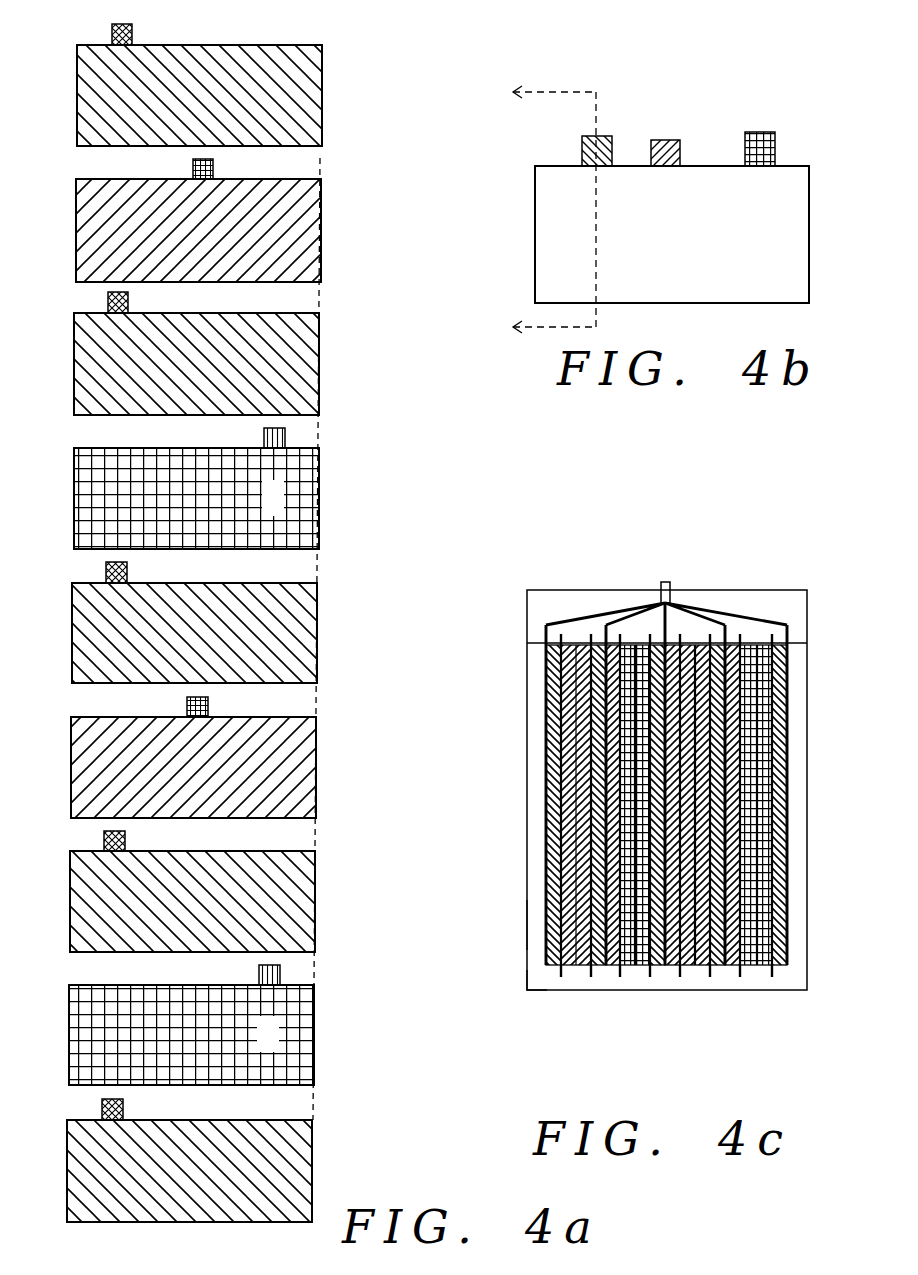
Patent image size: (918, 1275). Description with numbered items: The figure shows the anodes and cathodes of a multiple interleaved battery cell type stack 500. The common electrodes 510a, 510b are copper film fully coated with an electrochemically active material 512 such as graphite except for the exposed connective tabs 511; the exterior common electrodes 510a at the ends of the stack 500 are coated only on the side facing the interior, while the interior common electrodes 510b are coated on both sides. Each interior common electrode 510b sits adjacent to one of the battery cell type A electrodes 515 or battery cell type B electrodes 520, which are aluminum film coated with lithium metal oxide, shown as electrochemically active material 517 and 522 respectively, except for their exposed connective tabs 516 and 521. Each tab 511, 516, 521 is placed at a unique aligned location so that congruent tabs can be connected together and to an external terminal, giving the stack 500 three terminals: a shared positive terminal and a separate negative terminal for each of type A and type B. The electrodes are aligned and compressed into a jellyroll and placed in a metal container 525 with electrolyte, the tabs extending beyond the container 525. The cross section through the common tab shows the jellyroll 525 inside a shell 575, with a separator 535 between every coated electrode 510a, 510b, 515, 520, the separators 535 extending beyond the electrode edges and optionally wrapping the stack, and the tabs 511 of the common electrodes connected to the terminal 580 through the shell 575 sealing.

In FIG. 4A, the stack of electrodes 500 is at (372, 46).
In FIG. 4B, the stack of electrodes 500 is at (636, 64).
In FIG. 4C, the stack of electrodes 500 is at (546, 967).
In FIG. 4A, the exterior common electrode 510a is at (322, 102).
In FIG. 4C, the exterior common electrode 510a is at (546, 888).
In FIG. 4A, the interior common electrode 510b is at (319, 378).
In FIG. 4C, the interior common electrode 510b is at (604, 977).
In FIG. 4A, the connective tab 511 is at (112, 36).
In FIG. 4B, the connective tab 511 is at (582, 152).
In FIG. 4C, the connective tab 511 is at (592, 634).
In FIG. 4C, the electrochemically active material 512 is at (546, 803).
In FIG. 4A, the battery cell type A electrode 515 is at (321, 243).
In FIG. 4C, the battery cell type A electrode 515 is at (582, 650).
In FIG. 4A, the connective tab 516 is at (213, 170).
In FIG. 4B, the connective tab 516 is at (651, 152).
In FIG. 4C, the electrochemically active material 517 is at (561, 977).
In FIG. 4A, the battery cell type B electrode 520 is at (319, 512).
In FIG. 4C, the battery cell type B electrode 520 is at (640, 650).
In FIG. 4A, the connective tab 521 is at (285, 438).
In FIG. 4B, the connective tab 521 is at (745, 152).
In FIG. 4C, the electrochemically active material 522 is at (620, 977).
In FIG. 4B, the container 525 is at (535, 222).
In FIG. 4C, the container 525 is at (527, 640).
In FIG. 4C, the separator 535 is at (621, 634).
In FIG. 4C, the shell 575 is at (527, 925).
In FIG. 4C, the terminal 580 is at (666, 582).